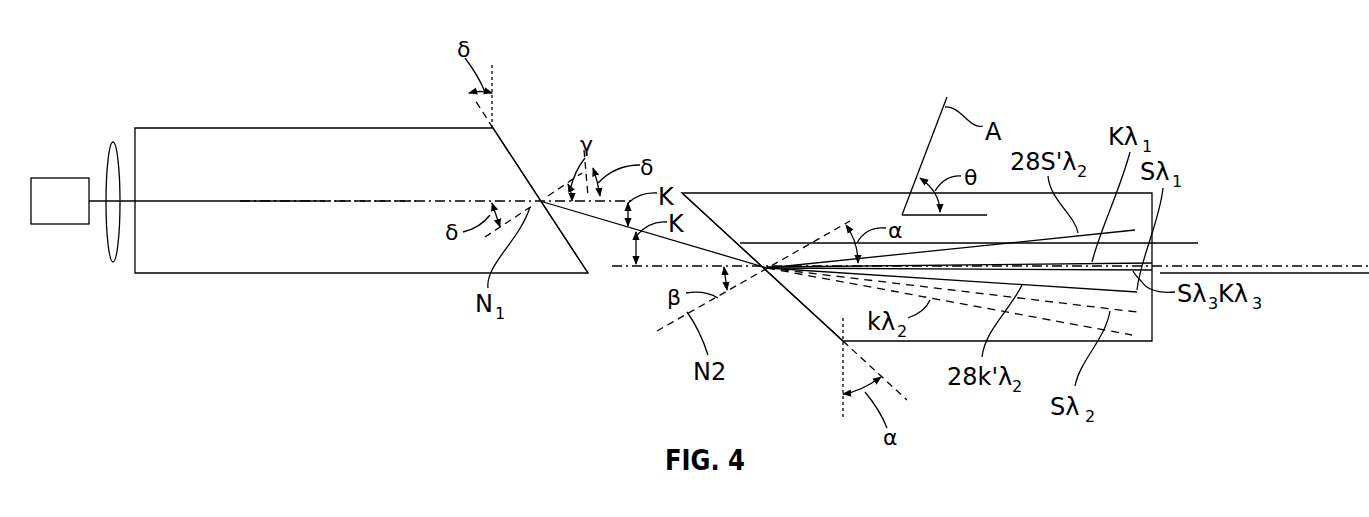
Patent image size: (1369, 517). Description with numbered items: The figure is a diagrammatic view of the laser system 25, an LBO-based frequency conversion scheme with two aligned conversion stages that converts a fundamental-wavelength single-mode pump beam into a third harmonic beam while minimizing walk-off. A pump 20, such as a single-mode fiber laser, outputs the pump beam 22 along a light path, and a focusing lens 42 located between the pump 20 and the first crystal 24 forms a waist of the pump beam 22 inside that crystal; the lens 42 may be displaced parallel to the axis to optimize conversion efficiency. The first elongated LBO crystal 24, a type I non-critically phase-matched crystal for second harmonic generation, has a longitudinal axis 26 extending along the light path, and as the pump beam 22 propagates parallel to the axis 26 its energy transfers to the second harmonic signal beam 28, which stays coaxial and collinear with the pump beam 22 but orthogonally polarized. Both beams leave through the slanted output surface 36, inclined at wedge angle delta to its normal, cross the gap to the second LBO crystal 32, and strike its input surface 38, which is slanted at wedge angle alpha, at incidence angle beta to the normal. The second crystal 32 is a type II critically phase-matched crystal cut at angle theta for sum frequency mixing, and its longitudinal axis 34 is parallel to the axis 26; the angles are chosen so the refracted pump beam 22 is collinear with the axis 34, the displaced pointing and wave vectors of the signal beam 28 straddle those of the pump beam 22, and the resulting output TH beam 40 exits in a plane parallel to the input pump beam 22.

The pump 20 is at (73, 214).
The pump beam 22 is at (226, 198).
The first elongated LBO crystal 24 is at (233, 266).
The laser system 25 is at (698, 128).
The longitudinal axis 26 is at (408, 198).
The signal beam 28 is at (617, 224).
The second LBO crystal 32 is at (762, 226).
The longitudinal axis 34 is at (1292, 264).
The slanted output surface 36 is at (498, 138).
The input surface 38 is at (810, 313).
The output TH beam 40 is at (1340, 275).
The focusing lens 42 is at (106, 233).